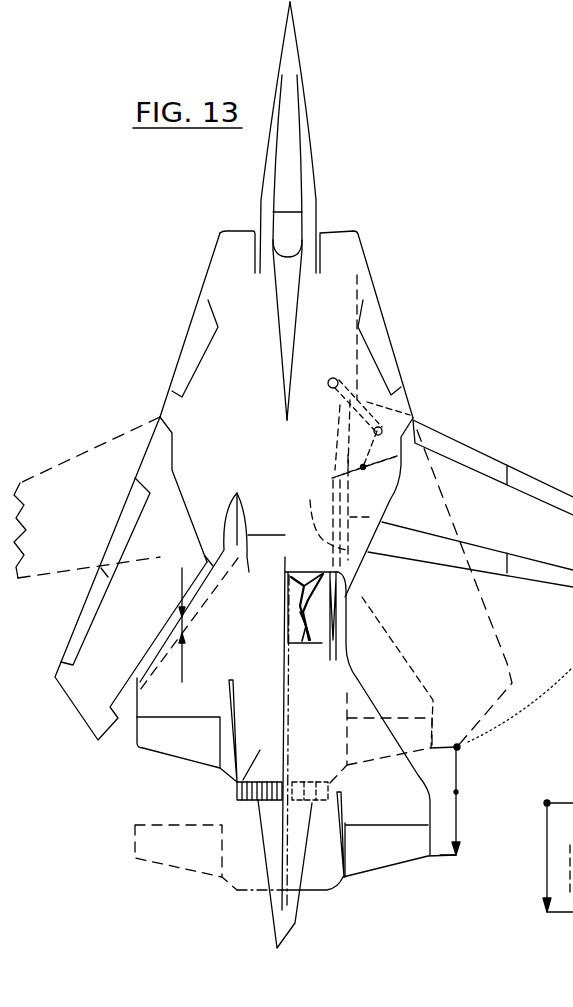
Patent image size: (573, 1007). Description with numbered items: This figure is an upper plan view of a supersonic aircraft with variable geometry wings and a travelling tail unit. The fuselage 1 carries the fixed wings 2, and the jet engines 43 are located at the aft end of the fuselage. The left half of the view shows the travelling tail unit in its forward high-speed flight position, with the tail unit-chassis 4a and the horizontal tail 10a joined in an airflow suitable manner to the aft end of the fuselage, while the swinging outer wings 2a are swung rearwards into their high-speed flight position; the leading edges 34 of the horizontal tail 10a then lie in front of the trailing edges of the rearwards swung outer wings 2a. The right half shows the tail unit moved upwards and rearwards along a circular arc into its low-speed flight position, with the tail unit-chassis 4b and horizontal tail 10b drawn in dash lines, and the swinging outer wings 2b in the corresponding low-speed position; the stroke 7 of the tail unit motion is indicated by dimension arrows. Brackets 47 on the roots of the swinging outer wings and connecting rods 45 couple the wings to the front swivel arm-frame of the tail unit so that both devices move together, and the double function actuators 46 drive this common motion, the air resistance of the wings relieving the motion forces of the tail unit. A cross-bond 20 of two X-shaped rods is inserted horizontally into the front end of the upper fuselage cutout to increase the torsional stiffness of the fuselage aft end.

The fuselage 1 is at (312, 218).
The fixed wings 2 is at (227, 365).
The swinging outer wings in their high-speed flight position 2a is at (143, 572).
The swinging outer wings in their low-speed flight position 2b is at (475, 493).
The brackets positioned on the roots of the swinging outer wings 47 is at (325, 478).
The double function actuators for the swinging outer wings and the travelling tail u 46 is at (357, 402).
The horizontal tail in its forward high-speed flight position 10a is at (186, 688).
The horizontal tail in its rearward low-speed flight position 10b is at (390, 803).
The leading edges of the horizontal tail 34 is at (183, 628).
The cross-bond 20 is at (287, 602).
The connecting rod between the travelling tail unit and the variable geometry wings 45 is at (337, 600).
The tail unit-chassis in its forward high-speed flight position 4a is at (235, 782).
The tail unit-chassis in its rearward low-speed flight position 4b is at (322, 855).
The jet engines 43 is at (285, 890).
The stroke of the tail unit motion 7 is at (547, 850).